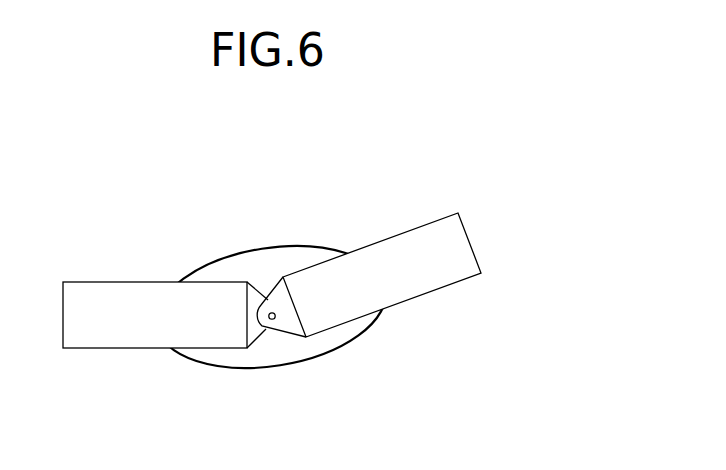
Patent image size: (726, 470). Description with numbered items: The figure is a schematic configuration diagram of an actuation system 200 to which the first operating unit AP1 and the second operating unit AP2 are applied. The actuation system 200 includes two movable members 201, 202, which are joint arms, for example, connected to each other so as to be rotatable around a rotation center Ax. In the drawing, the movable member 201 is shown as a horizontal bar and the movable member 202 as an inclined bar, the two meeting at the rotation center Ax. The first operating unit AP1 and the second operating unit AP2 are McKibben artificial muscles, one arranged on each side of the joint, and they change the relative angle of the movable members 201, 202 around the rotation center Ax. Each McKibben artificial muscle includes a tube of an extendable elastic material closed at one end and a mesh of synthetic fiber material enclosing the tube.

The actuation system 200 is at (408, 150).
The movable member 201 is at (115, 281).
The movable member 202 is at (414, 298).
The first operating unit AP1 is at (242, 256).
The second operating unit AP2 is at (238, 370).
The rotation center Ax is at (276, 322).